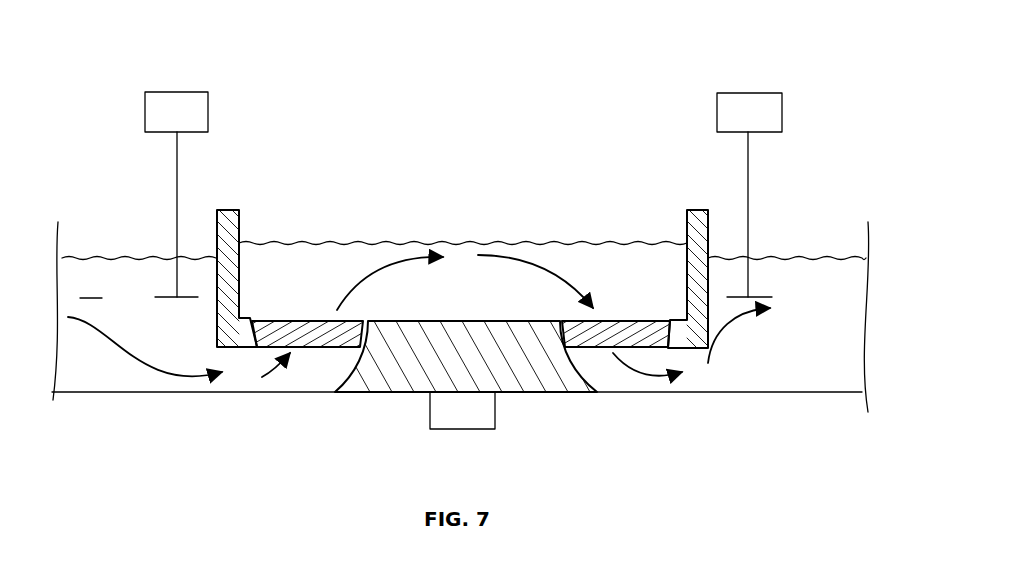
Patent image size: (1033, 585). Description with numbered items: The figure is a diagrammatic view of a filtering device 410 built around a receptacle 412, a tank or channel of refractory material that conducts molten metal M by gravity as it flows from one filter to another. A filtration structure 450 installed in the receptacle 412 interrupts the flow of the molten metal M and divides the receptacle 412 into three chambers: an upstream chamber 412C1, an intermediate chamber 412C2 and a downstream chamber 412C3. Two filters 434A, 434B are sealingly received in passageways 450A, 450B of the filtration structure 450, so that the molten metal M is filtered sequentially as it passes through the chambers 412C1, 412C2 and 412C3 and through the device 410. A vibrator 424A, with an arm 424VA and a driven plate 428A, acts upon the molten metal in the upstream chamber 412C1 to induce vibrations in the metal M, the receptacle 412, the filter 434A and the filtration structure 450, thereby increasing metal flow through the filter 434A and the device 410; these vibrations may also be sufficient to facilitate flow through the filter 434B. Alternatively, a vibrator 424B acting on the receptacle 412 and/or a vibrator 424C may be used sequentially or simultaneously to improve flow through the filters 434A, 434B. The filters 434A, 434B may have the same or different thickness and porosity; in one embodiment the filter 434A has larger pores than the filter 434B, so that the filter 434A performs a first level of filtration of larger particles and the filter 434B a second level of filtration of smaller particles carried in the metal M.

The filtering device 410 is at (815, 68).
The receptacle 412 is at (804, 394).
The upstream chamber 412C1 is at (137, 273).
The intermediate chamber 412C2 is at (305, 258).
The downstream chamber 412C3 is at (840, 278).
The molten metal M is at (91, 288).
The vibrator 424A is at (176, 100).
The vibrator 424B is at (467, 417).
The vibrator 424C is at (740, 105).
The arm 424VA is at (177, 167).
The driven plate 428A is at (183, 297).
The filter 434A is at (295, 330).
The filter 434B is at (593, 333).
The filtration structure 450 is at (472, 293).
The passageway 450A is at (258, 347).
The passageway 450B is at (673, 325).